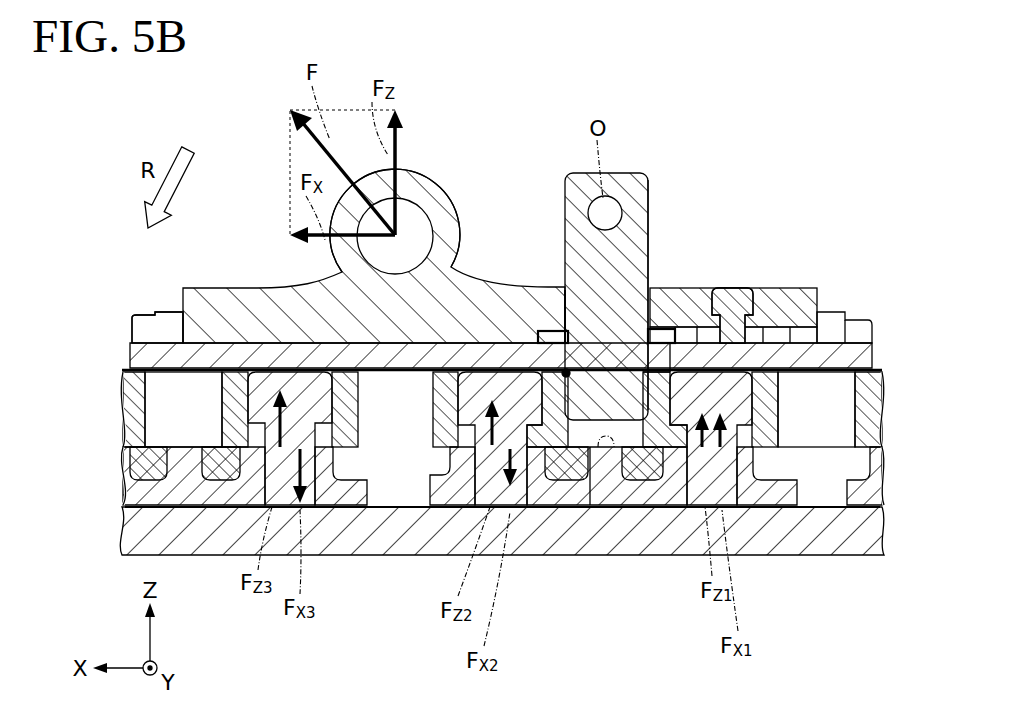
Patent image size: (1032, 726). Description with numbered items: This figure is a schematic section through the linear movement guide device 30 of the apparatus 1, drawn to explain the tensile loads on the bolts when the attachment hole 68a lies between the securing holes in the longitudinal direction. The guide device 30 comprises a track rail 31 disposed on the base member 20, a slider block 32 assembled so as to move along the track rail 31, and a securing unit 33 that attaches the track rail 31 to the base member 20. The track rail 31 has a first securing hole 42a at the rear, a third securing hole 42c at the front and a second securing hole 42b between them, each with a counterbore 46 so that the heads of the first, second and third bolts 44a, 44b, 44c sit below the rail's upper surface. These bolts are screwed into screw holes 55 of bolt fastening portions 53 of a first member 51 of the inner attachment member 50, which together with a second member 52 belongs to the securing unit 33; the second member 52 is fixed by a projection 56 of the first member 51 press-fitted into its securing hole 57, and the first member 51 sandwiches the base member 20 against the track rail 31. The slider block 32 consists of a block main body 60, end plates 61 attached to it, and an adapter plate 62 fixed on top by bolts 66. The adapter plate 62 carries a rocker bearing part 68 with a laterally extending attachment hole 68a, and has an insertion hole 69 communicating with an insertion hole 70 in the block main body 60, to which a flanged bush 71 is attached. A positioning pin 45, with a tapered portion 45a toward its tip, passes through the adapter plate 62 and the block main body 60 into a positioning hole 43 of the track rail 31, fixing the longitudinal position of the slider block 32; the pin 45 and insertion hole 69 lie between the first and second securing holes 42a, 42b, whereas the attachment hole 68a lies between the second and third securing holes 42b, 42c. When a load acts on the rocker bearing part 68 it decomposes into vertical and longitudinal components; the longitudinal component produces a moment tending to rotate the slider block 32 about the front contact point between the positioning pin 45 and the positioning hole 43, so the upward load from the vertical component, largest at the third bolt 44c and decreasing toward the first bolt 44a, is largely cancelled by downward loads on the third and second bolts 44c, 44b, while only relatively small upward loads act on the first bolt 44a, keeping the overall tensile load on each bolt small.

The vehicle 1 is at (820, 153).
The base member 20 is at (822, 537).
The linear movement guide device 30 is at (850, 188).
The track rail 31 is at (528, 350).
The slider block 32 is at (284, 260).
The securing unit 33 is at (191, 515).
The first securing hole 42a is at (745, 372).
The second securing hole 42b is at (500, 395).
The third securing hole 42c is at (238, 385).
The positioning hole 43 is at (648, 300).
The first bolt 44a is at (712, 332).
The second bolt 44b is at (480, 380).
The third bolt 44c is at (268, 380).
The positioning pin 45 is at (620, 176).
The tapered portion 45a is at (548, 338).
The counterbore 46 is at (314, 490).
The inner attachment member 50 is at (502, 548).
The first member 51 is at (592, 507).
The second member 52 is at (552, 507).
The bolt fastening portion 53 is at (462, 470).
The screw hole 55 is at (334, 480).
The projection 56 is at (600, 482).
The securing hole 57 is at (640, 480).
The block main body 60 is at (172, 330).
The end plate 61 is at (128, 345).
The adapter plate 62 is at (792, 328).
The bolt 66 is at (733, 290).
The rocker bearing part 68 is at (410, 185).
The attachment hole 68a is at (413, 275).
The insertion hole 69 is at (652, 370).
The insertion hole 70 is at (685, 500).
The bush 71 is at (668, 345).